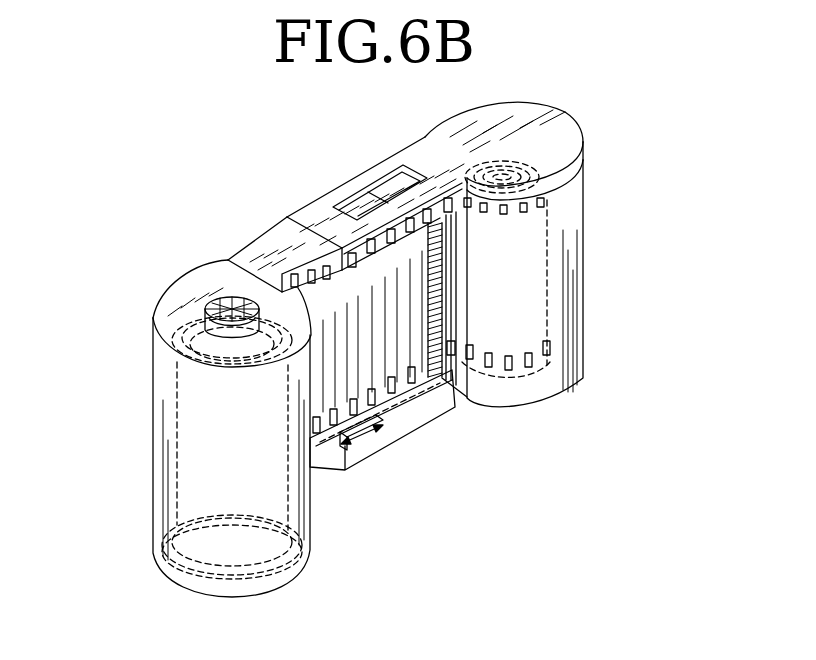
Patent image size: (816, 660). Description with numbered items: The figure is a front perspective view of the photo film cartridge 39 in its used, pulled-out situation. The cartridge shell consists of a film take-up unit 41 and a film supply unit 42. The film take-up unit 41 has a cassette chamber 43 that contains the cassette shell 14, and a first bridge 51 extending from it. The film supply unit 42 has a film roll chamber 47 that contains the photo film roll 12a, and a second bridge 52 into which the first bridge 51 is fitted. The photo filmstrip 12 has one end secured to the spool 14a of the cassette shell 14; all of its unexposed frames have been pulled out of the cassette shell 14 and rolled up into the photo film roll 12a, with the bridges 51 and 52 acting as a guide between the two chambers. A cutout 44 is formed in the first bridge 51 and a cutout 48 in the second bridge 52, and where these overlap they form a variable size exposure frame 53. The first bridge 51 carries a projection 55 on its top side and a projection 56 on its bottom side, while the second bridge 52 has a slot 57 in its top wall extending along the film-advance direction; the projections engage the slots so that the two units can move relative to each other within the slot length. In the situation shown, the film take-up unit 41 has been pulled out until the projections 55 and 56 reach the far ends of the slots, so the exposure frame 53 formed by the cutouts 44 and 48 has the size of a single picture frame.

The photo filmstrip 12 is at (400, 372).
The photo film roll 12a is at (518, 367).
The cassette shell 14 is at (175, 410).
The spool 14a is at (153, 318).
The photo film cartridge 39 is at (612, 350).
The film take-up unit 41 is at (186, 281).
The film supply unit 42 is at (590, 136).
The cassette chamber 43 is at (190, 585).
The cutout 44 is at (322, 473).
The film roll chamber 47 is at (565, 198).
The cutout 48 is at (440, 417).
The first bridge 51 is at (275, 240).
The second bridge 52 is at (410, 148).
The variable size exposure frame 53 is at (323, 296).
The projection 55 is at (333, 208).
The projection 56 is at (375, 468).
The slot 57 is at (383, 195).